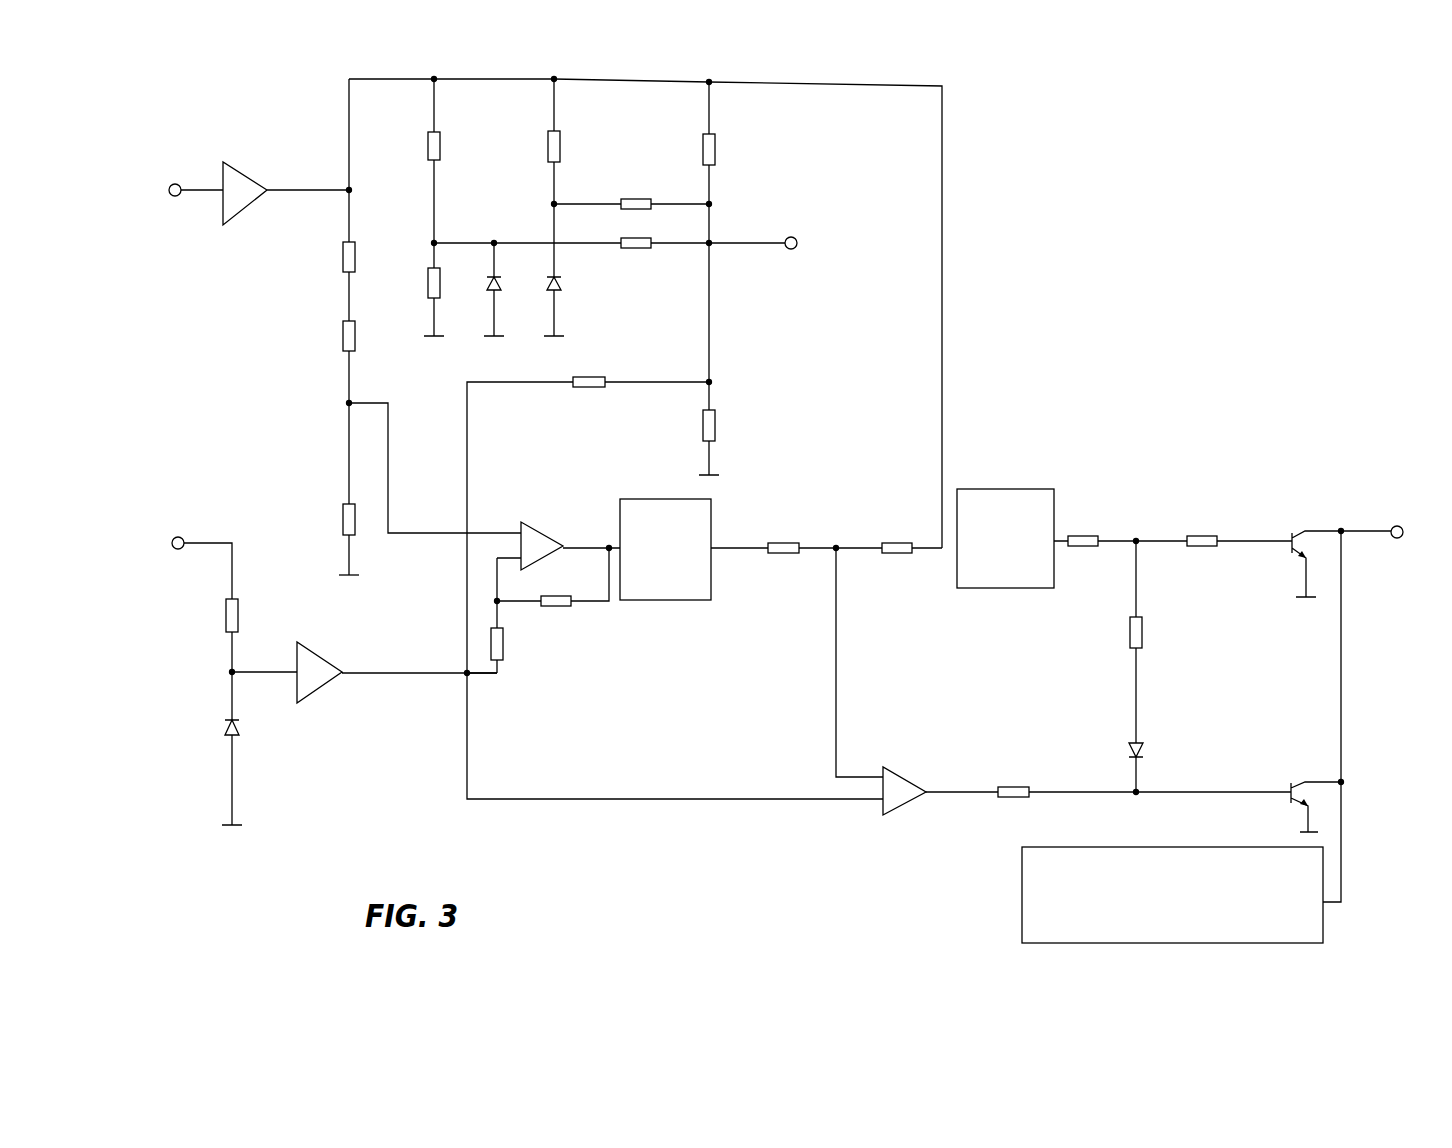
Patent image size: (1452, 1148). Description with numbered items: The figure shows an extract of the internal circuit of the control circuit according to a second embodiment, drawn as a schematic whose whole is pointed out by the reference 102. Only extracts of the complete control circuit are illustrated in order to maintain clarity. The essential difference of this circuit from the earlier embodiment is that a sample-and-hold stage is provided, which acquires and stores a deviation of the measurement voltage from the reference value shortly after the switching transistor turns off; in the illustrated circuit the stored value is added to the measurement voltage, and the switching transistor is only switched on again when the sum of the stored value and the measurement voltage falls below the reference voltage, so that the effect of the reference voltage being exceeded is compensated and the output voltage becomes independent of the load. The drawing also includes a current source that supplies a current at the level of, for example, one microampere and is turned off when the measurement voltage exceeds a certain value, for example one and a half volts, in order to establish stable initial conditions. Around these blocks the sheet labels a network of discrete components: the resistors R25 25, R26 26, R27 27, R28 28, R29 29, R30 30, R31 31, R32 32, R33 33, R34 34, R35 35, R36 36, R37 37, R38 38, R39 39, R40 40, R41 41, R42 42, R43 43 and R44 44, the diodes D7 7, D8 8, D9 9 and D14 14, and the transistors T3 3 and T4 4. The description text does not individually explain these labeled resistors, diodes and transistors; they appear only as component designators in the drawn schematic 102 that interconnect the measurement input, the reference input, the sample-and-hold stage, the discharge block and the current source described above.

The comparator and sample-and-hold circuit 102 is at (700, 839).
The resistor R25 is at (1201, 531).
The resistor R25 25 is at (1201, 531).
The resistor R26 is at (1082, 531).
The resistor R26 26 is at (1082, 531).
The resistor R27 is at (1127, 631).
The resistor R27 27 is at (1127, 631).
The resistor R28 is at (1012, 782).
The resistor R28 28 is at (1012, 782).
The resistor R29 is at (896, 537).
The resistor R29 29 is at (896, 537).
The resistor R30 is at (782, 537).
The resistor R30 30 is at (782, 537).
The resistor R31 is at (588, 372).
The resistor R31 31 is at (588, 372).
The resistor R32 is at (700, 424).
The resistor R32 32 is at (700, 424).
The resistor R33 is at (700, 149).
The resistor R33 33 is at (700, 149).
The resistor R34 is at (635, 233).
The resistor R34 34 is at (635, 233).
The resistor R35 is at (635, 194).
The resistor R35 35 is at (635, 194).
The resistor R36 is at (545, 145).
The resistor R36 36 is at (545, 145).
The resistor R37 is at (425, 282).
The resistor R37 37 is at (425, 282).
The resistor R38 is at (425, 145).
The resistor R38 38 is at (425, 145).
The resistor R39 is at (223, 615).
The resistor R39 39 is at (223, 615).
The resistor R40 is at (340, 256).
The resistor R40 40 is at (340, 256).
The resistor R41 is at (340, 335).
The resistor R41 41 is at (340, 335).
The resistor R42 is at (340, 518).
The resistor R42 42 is at (340, 518).
The resistor R43 is at (555, 591).
The resistor R43 43 is at (555, 591).
The resistor R44 is at (488, 643).
The resistor R44 44 is at (488, 643).
The diode D7 is at (1128, 750).
The diode D7 7 is at (1128, 750).
The diode D8 is at (546, 282).
The diode D8 8 is at (546, 282).
The diode D9 is at (486, 282).
The diode D9 9 is at (486, 282).
The diode D14 is at (224, 727).
The diode D14 14 is at (224, 727).
The transistor T3 is at (1308, 796).
The transistor T3 3 is at (1308, 796).
The transistor T4 is at (1308, 553).
The transistor T4 4 is at (1308, 553).